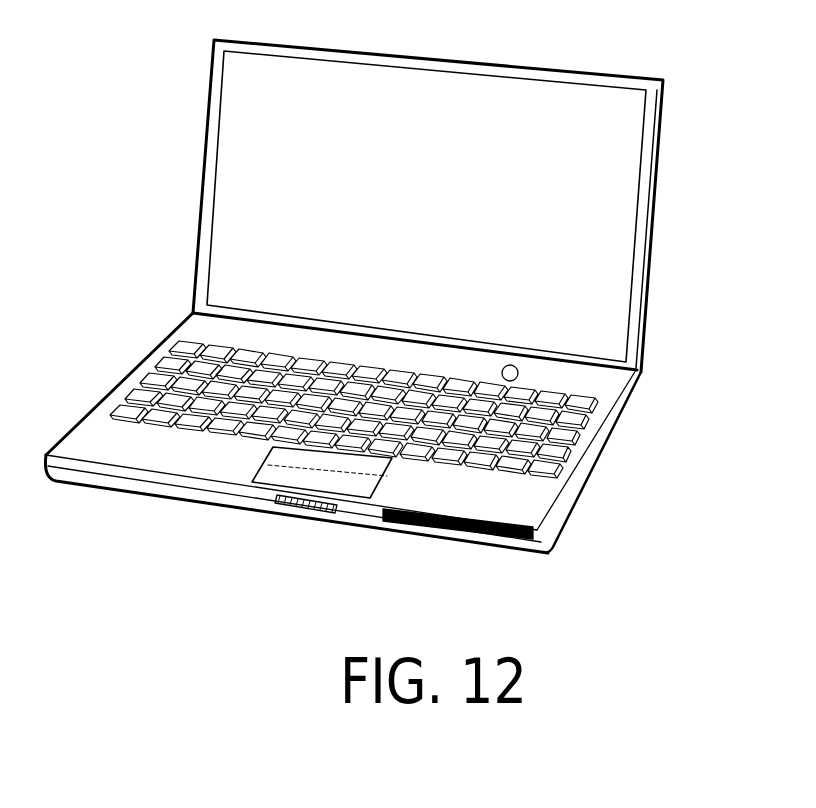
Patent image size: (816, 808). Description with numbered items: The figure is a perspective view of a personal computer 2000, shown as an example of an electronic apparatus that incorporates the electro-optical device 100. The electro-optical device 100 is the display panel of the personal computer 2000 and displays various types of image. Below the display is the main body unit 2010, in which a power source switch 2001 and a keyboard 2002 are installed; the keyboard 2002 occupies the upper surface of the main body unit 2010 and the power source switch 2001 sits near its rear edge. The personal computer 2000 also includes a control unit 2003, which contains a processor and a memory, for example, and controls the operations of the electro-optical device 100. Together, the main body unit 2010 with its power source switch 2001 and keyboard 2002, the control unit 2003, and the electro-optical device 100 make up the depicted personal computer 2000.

The electro-optical device 100 is at (533, 112).
The personal computer 2000 is at (377, 279).
The main body unit 2010 is at (72, 438).
The power source switch 2001 is at (518, 368).
The keyboard 2002 is at (568, 450).
The control unit 2003 is at (553, 493).